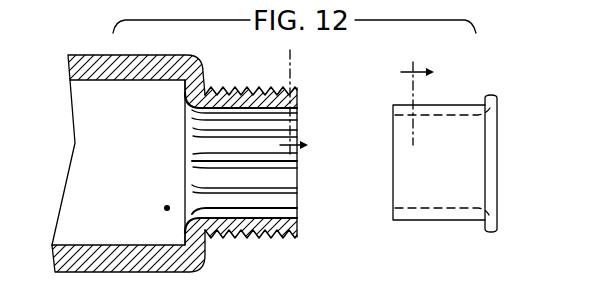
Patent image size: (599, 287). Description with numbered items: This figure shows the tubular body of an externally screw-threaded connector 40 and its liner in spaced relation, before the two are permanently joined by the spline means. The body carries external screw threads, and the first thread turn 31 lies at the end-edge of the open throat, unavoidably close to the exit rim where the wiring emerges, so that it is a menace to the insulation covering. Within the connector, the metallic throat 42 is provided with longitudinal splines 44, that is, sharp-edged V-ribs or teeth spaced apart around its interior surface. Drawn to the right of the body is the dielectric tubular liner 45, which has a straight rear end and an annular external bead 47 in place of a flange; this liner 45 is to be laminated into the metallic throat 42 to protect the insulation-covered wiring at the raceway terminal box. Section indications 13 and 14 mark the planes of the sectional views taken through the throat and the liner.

The connector 40 is at (87, 68).
The first thread turn 31 is at (298, 88).
The metallic throat 42 is at (300, 211).
The longitudinal splines 44 is at (247, 190).
The section line 13- 13 is at (312, 111).
The section line 14- 14 is at (427, 92).
The tubular liner 45 is at (442, 190).
The annular external bead 47 is at (490, 150).